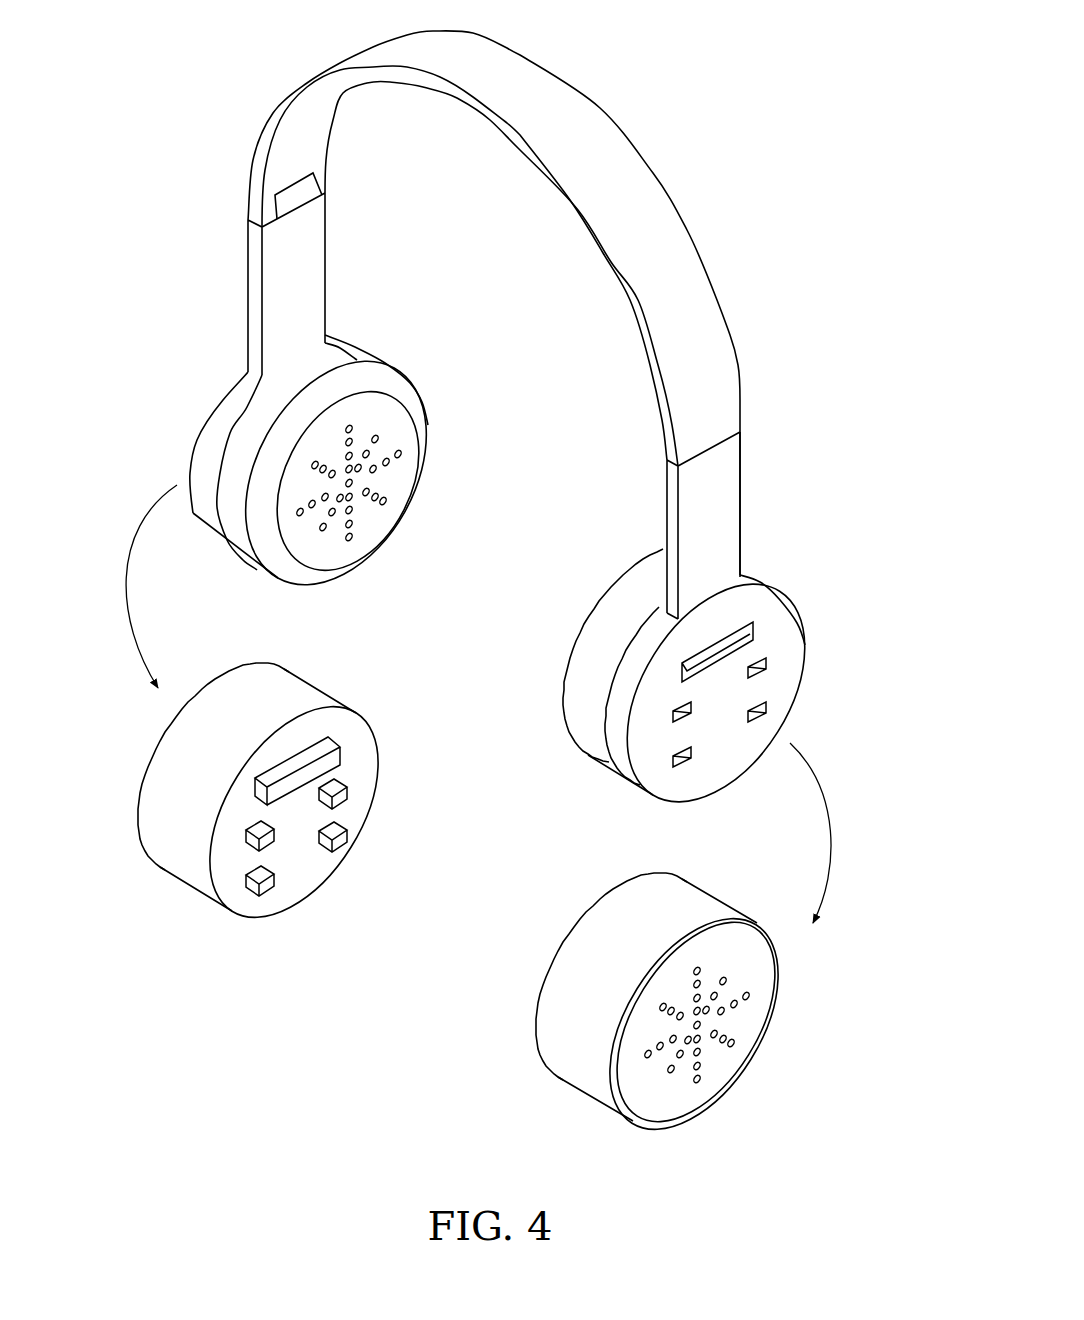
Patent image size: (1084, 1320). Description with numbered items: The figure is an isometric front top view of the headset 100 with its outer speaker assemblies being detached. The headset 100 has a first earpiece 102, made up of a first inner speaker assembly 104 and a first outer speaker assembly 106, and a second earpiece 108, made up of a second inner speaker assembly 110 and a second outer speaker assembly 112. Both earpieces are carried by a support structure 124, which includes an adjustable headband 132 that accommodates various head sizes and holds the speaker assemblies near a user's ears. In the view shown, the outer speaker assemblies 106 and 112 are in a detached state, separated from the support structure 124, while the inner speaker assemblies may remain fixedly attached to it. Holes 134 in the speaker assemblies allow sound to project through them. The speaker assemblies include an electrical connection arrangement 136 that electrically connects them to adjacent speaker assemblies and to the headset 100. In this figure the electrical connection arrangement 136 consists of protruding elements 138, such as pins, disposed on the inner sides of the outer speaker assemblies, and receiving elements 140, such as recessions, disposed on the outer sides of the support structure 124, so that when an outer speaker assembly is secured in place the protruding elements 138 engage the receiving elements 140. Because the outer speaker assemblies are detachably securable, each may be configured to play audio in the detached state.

The headset 100 is at (771, 80).
The first earpiece 102 is at (386, 309).
The first inner speaker assembly 104 is at (277, 595).
The first outer speaker assembly 106 is at (182, 906).
The second earpiece 108 is at (854, 601).
The second inner speaker assembly 110 is at (582, 769).
The second outer speaker assembly 112 is at (756, 1079).
The support structure 124 is at (601, 107).
The headband 132 is at (530, 97).
The holes 134 is at (389, 419).
The electrical connection arrangement 136 is at (358, 859).
The protruding elements 138 is at (291, 791).
The receiving elements 140 is at (713, 656).